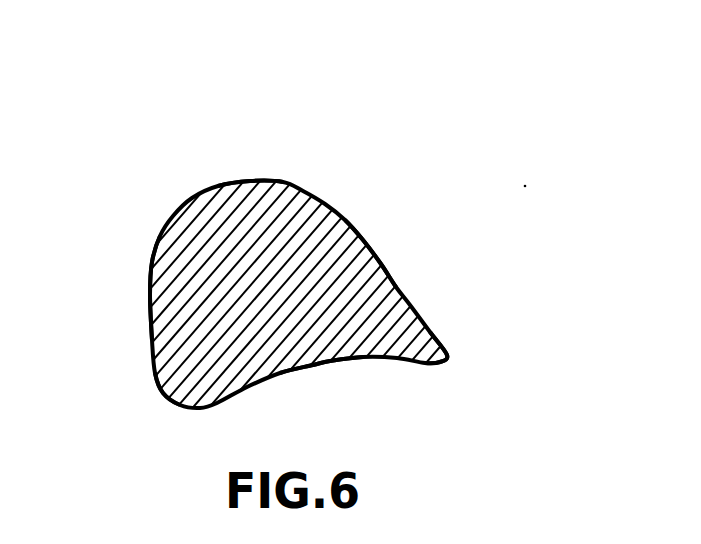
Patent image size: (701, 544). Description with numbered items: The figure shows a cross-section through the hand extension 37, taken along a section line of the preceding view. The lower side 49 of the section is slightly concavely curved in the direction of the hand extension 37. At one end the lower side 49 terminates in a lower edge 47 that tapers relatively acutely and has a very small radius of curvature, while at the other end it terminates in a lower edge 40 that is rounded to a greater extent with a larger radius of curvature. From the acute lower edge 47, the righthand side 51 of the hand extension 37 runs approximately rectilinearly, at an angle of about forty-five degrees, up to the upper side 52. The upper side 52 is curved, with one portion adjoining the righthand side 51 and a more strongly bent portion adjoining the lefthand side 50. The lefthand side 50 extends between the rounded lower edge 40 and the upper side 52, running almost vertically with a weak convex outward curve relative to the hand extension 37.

The hand extension 37 is at (365, 179).
The upper side 52 is at (238, 182).
The lefthand side 50 is at (150, 270).
The righthand side 51 is at (366, 240).
The lower edge 47 is at (448, 360).
The lower side 49 is at (318, 365).
The lower edge 40 is at (158, 382).